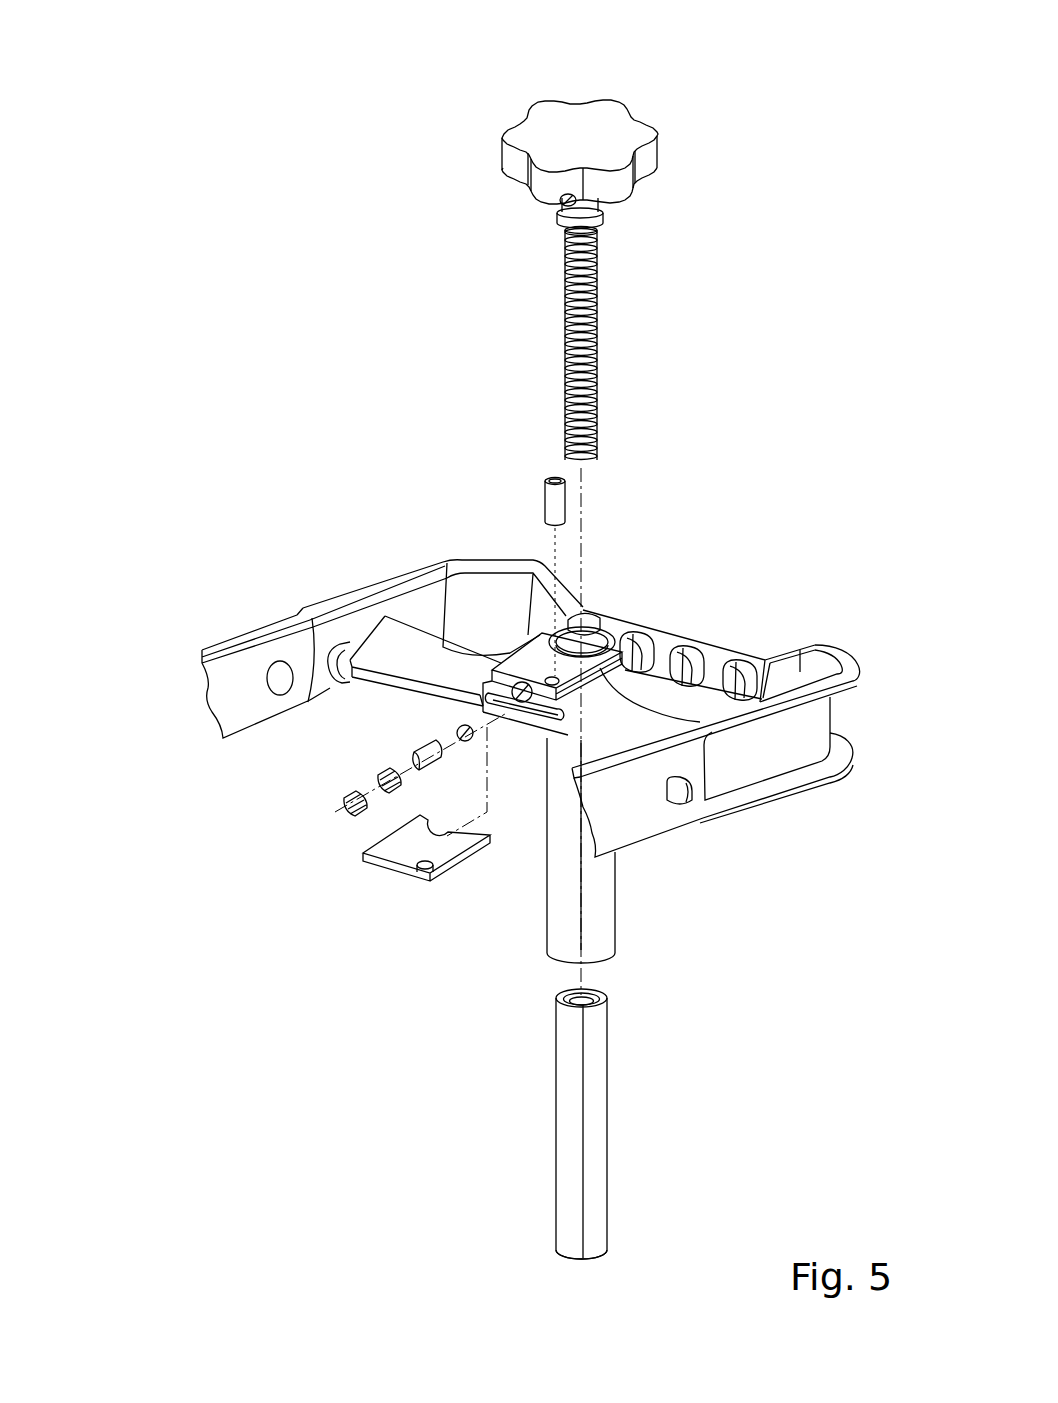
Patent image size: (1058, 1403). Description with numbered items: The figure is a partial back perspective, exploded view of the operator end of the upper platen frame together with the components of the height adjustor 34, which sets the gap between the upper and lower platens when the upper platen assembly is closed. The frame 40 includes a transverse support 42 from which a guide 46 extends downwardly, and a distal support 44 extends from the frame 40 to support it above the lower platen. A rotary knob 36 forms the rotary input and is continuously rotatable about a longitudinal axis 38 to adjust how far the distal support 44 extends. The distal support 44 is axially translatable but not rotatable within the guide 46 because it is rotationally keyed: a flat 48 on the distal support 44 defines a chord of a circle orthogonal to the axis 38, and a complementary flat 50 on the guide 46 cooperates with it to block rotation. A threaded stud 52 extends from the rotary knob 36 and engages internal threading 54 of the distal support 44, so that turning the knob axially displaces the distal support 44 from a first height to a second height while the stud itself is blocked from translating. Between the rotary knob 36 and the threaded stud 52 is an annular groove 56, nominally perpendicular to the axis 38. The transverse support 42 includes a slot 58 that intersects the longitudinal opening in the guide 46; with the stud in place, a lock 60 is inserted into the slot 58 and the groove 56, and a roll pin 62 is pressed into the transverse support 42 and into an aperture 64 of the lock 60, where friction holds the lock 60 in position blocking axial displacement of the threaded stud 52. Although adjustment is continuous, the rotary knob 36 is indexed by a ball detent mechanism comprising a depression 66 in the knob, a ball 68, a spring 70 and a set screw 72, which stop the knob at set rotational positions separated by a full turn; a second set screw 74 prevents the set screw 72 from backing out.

The height adjustor 34 is at (849, 240).
The rotary knob 36 is at (592, 115).
The longitudinal axis 38 is at (585, 517).
The frame 40 is at (220, 665).
The transverse support 42 is at (407, 652).
The distal support 44 is at (593, 1239).
The guide 46 is at (602, 927).
The flat 48 is at (570, 1123).
The flat 50 is at (570, 650).
The threaded stud 52 is at (636, 369).
The internal threading 54 is at (608, 998).
The annular groove 56 is at (558, 216).
The slot 58 is at (537, 712).
The lock 60 is at (382, 876).
The roll pin 62 is at (553, 512).
The aperture 64 is at (425, 870).
The depression 66 is at (562, 198).
The ball 68 is at (457, 731).
The spring 70 is at (430, 763).
The set screw 72 is at (375, 778).
The second set screw 74 is at (343, 805).